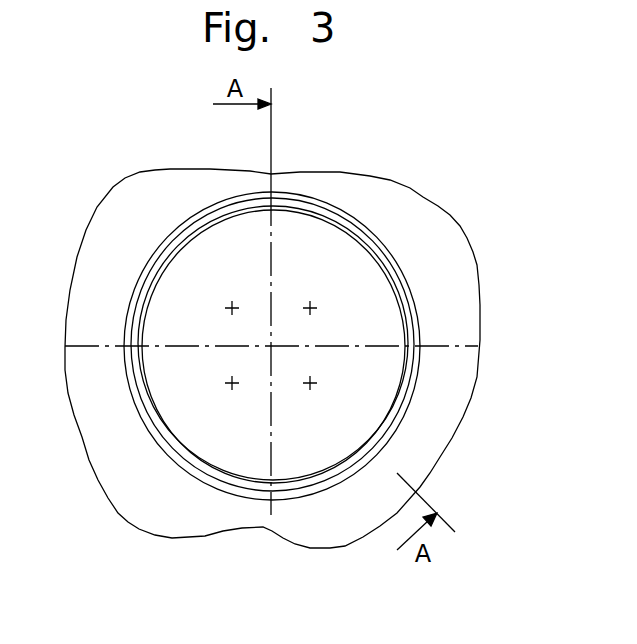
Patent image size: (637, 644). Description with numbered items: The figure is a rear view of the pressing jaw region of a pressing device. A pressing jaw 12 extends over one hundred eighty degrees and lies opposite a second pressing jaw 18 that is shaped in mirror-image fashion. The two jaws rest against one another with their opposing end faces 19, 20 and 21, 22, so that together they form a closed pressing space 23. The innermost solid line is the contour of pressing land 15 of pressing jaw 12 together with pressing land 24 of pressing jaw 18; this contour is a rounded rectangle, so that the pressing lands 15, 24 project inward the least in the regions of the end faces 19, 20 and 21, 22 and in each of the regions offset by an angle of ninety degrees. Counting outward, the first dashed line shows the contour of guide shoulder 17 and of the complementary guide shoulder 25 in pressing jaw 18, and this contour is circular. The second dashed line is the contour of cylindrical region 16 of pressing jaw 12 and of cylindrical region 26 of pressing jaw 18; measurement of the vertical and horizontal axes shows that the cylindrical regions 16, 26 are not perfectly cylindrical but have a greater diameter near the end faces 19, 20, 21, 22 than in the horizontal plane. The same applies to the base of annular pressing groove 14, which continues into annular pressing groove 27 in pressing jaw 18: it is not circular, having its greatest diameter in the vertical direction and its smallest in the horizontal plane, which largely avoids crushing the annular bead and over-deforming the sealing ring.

The pressing jaw 12 is at (417, 208).
The annular pressing groove 14 is at (408, 405).
The pressing land 15 is at (373, 232).
The cylindrical region 16 is at (320, 208).
The guide shoulder 17 is at (337, 225).
The second pressing jaw 18 is at (121, 489).
The end face 19 is at (272, 192).
The end face 20 is at (272, 192).
The end face 21 is at (271, 515).
The end face 22 is at (271, 515).
The closed pressing space 23 is at (228, 448).
The pressing land 24 is at (190, 472).
The complementary guide shoulder 25 is at (173, 443).
The cylindrical region 26 is at (152, 432).
The annular pressing groove 27 is at (123, 508).